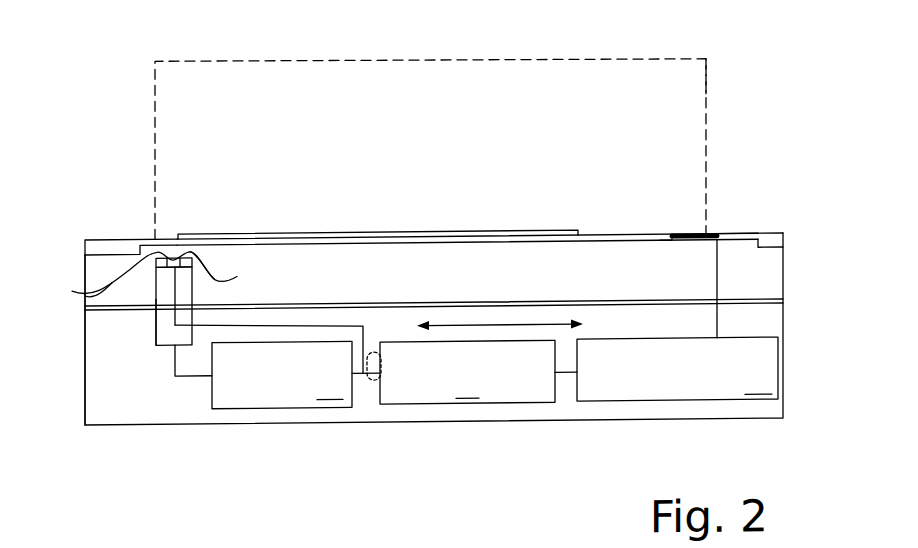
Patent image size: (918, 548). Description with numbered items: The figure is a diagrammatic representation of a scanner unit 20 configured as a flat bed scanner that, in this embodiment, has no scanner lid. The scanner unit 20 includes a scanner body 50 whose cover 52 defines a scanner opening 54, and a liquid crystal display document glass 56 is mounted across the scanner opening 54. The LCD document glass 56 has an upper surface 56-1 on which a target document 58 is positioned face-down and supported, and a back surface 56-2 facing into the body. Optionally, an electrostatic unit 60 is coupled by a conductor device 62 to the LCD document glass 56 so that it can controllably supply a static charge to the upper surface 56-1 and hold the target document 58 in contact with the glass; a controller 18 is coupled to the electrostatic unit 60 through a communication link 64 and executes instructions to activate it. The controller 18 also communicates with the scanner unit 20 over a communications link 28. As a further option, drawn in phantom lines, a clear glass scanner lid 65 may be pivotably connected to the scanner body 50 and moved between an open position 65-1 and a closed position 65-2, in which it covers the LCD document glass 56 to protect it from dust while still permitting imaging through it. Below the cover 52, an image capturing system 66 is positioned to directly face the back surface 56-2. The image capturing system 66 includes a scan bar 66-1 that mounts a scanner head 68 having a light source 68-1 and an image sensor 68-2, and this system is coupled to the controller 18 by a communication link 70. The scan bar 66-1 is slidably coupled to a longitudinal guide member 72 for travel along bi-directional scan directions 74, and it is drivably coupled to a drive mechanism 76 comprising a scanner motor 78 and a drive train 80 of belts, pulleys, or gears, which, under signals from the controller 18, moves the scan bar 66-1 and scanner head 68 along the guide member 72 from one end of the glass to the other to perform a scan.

The controller 18 is at (467, 372).
The scanner unit 20 is at (497, 174).
The communications link 28 is at (373, 387).
The scanner body 50 is at (783, 359).
The cover 52 is at (128, 247).
The scanner opening 54 is at (577, 264).
The LCD document glass 56 is at (691, 243).
The upper surface 56-1 is at (648, 240).
The back surface 56-2 is at (663, 248).
The target document 58 is at (312, 235).
The electrostatic unit 60 is at (677, 369).
The conductor device 62 is at (718, 287).
The communication link 64 is at (560, 383).
The clear glass scanner lid 65 is at (662, 65).
The open position 65-1 is at (730, 69).
The closed position 65-2 is at (736, 220).
The image capturing system 66 is at (50, 360).
The scan bar 66-1 is at (156, 331).
The scanner head 68 is at (114, 266).
The light source 68-1 is at (68, 289).
The image sensor 68-2 is at (234, 265).
The communication link 70 is at (298, 328).
The longitudinal guide member 72 is at (113, 311).
The bi-directional scan directions 74 is at (502, 328).
The drive mechanism 76 is at (163, 395).
The scanner motor 78 is at (296, 375).
The drive train 80 is at (194, 378).